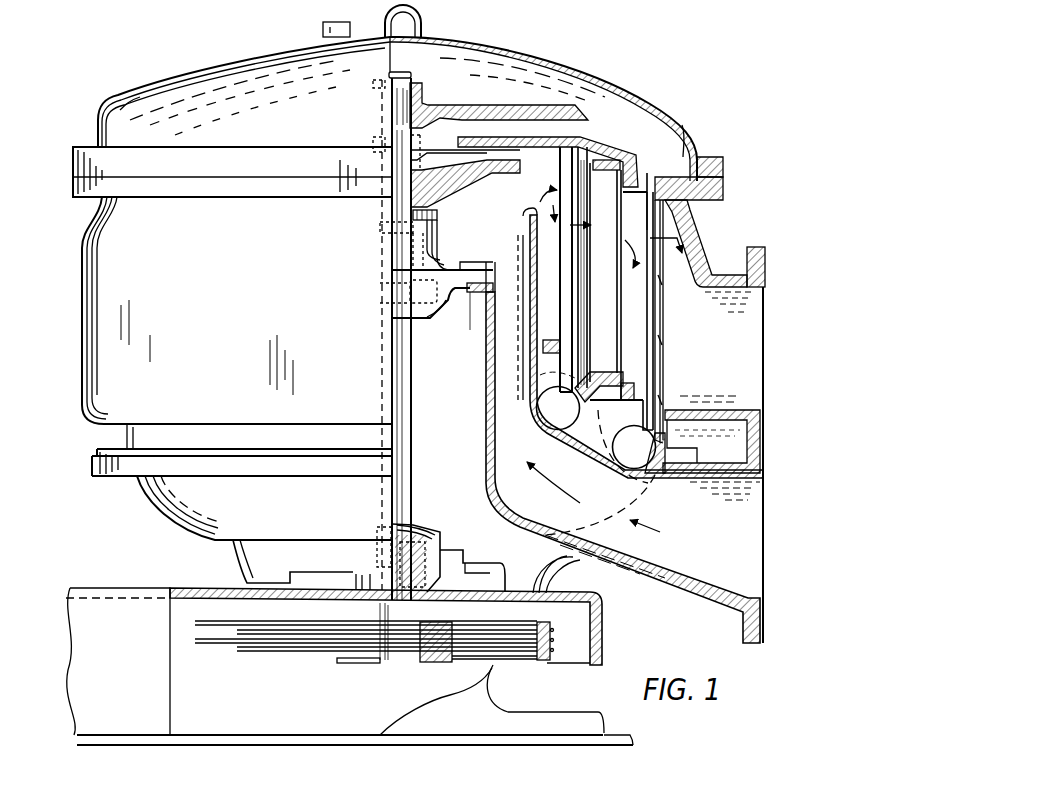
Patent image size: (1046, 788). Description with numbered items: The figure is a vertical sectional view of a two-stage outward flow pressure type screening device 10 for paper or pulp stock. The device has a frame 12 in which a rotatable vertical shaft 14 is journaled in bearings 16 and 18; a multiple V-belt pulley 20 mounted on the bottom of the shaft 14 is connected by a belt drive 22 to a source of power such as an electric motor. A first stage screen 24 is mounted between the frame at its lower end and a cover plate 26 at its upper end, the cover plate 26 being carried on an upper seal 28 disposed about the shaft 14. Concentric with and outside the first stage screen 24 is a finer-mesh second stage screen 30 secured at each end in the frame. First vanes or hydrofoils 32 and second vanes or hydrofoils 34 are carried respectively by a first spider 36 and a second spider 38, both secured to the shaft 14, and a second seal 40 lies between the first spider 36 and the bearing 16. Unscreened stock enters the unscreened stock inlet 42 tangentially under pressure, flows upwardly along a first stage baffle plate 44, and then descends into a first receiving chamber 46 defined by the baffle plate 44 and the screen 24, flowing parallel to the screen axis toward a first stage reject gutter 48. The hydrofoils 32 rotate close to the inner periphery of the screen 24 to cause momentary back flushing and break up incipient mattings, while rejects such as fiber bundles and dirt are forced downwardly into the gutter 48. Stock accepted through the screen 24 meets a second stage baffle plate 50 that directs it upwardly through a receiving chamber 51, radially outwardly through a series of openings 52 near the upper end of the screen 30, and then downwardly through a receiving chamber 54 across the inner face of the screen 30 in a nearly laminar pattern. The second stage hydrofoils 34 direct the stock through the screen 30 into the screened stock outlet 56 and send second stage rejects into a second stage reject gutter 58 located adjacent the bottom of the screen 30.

The plural stage pressure type screening device 10 is at (549, 54).
The frame 12 is at (598, 660).
The rotatable vertical shaft 14 is at (407, 390).
The bearing 16 is at (380, 290).
The bearing 18 is at (433, 537).
The multiple V-belt pulley 20 is at (448, 665).
The belt drive 22 is at (232, 662).
The first stage screen 24 is at (583, 378).
The cover plate 26 is at (563, 139).
The upper seal 28 is at (388, 137).
The second stage screen 30 is at (657, 383).
The first vanes or hydrofoils 32 is at (565, 303).
The second vanes or hydrofoils 34 is at (650, 345).
The first spider 36 is at (460, 183).
The second spider 38 is at (524, 104).
The second seal 40 is at (380, 242).
The unscreened stock inlet 42 is at (782, 538).
The first stage baffle plate 44 is at (528, 222).
The first receiving chamber 46 is at (545, 252).
The first stage reject gutter 48 is at (546, 420).
The second stage baffle plate 50 is at (613, 287).
The receiving chamber 51 is at (572, 283).
The openings 52 is at (633, 212).
The receiving chamber 54 is at (637, 327).
The screened stock outlet 56 is at (786, 350).
The second stage reject gutter 58 is at (622, 459).